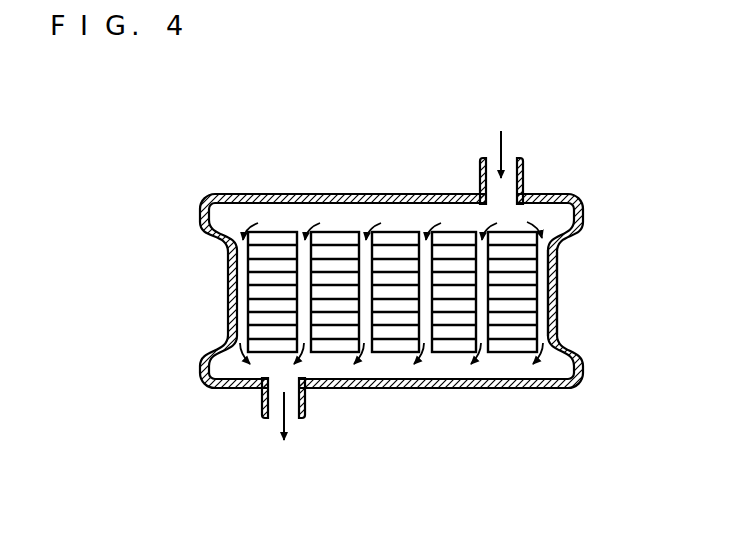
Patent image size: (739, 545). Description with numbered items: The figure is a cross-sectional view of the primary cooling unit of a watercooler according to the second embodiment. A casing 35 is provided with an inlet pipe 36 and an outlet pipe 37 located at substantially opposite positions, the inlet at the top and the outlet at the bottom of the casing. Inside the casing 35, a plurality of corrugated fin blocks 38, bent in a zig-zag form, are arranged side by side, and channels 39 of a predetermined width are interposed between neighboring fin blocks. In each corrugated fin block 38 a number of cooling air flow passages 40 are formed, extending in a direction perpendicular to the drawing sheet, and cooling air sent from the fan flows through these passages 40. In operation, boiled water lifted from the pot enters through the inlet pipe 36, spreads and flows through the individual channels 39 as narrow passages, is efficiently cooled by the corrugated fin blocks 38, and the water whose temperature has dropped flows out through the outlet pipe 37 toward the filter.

The casing 35 is at (443, 389).
The inlet pipe 36 is at (524, 163).
The outlet pipe 37 is at (307, 402).
The corrugated fin block 38 is at (548, 299).
The channel 39 is at (482, 307).
The cooling air flow passage 40 is at (393, 323).